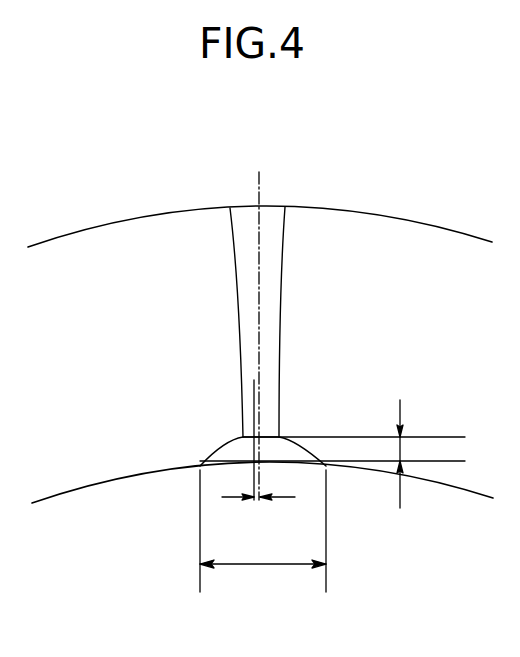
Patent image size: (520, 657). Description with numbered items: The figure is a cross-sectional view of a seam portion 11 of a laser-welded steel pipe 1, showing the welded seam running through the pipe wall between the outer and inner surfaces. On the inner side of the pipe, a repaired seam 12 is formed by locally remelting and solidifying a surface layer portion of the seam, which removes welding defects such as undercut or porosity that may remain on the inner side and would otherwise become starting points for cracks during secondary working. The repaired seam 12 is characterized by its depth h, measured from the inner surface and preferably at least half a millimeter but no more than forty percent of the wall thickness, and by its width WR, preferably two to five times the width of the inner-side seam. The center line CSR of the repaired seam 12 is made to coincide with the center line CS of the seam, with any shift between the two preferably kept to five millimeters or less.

The pneumatic tire 1 is at (186, 258).
The seam portion 11 is at (268, 227).
The repaired seam 12 is at (238, 455).
The center line of seam CS is at (262, 340).
The center line of repaired seam CSR is at (253, 470).
The width of repaired seam WR is at (263, 534).
The depth of repaired seam h is at (332, 454).